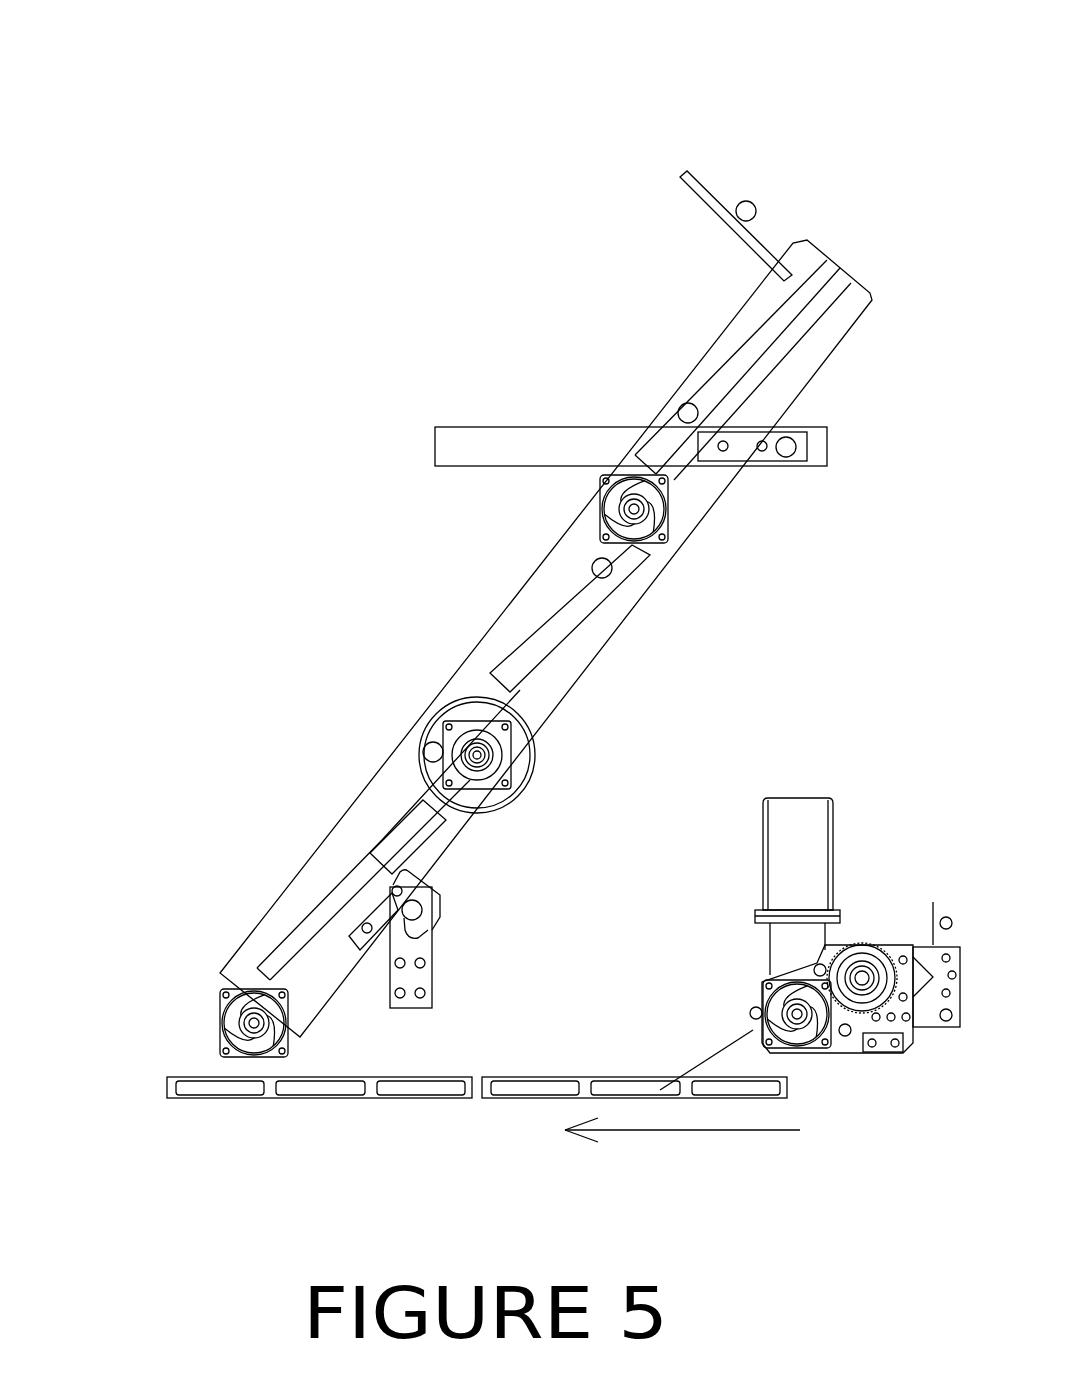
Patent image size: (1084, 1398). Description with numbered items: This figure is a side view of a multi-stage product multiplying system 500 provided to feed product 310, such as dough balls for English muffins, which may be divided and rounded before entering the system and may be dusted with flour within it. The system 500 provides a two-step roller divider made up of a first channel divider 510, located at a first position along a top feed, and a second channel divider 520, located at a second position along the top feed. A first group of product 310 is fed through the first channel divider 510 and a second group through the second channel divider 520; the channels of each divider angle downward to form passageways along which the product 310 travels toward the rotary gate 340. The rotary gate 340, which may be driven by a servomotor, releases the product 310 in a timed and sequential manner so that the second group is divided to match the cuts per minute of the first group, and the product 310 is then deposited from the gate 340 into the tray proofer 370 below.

The multi-stage product multiplying system 500 is at (503, 604).
The product 310 is at (752, 201).
The first channel divider 510 is at (677, 557).
The second channel divider 520 is at (512, 772).
The rotary gate 340 is at (240, 1021).
The tray proofer 370 is at (250, 1088).